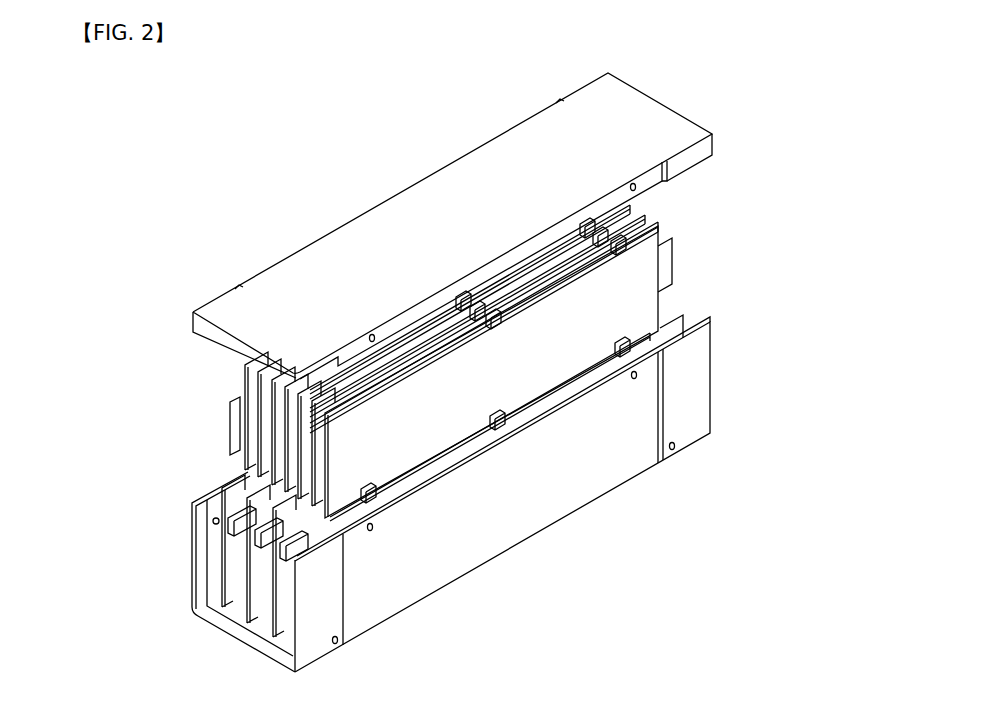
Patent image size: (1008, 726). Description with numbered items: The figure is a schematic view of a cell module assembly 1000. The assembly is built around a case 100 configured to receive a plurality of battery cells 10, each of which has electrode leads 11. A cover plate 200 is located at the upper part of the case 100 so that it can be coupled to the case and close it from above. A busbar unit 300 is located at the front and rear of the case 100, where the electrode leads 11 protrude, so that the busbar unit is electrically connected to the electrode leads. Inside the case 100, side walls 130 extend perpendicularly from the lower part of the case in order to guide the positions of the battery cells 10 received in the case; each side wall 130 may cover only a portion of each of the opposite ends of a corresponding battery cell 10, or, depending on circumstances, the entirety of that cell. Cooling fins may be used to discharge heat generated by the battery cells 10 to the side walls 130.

The cell module assembly 1000 is at (262, 108).
The cover plate 200 is at (419, 166).
The battery cells 10 is at (655, 305).
The electrode leads 11 is at (232, 437).
The busbar unit 300 is at (191, 552).
The case 100 is at (628, 495).
The side walls 130 is at (343, 529).